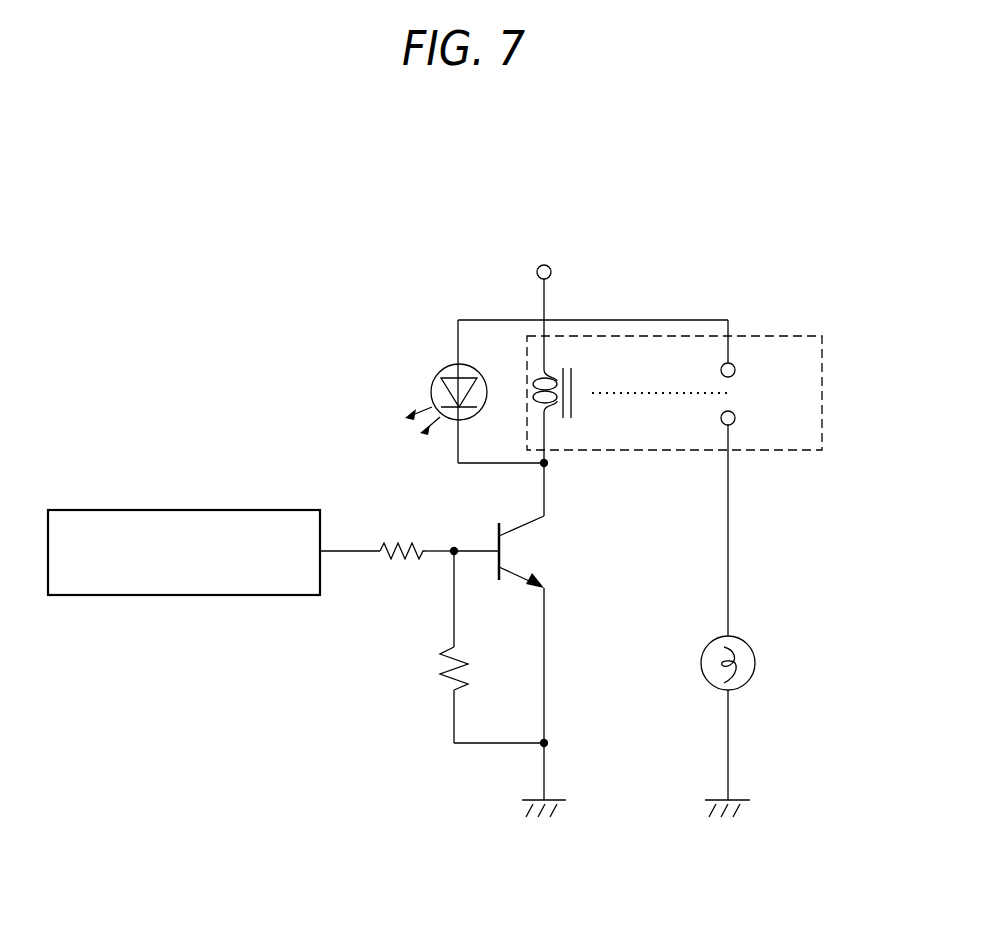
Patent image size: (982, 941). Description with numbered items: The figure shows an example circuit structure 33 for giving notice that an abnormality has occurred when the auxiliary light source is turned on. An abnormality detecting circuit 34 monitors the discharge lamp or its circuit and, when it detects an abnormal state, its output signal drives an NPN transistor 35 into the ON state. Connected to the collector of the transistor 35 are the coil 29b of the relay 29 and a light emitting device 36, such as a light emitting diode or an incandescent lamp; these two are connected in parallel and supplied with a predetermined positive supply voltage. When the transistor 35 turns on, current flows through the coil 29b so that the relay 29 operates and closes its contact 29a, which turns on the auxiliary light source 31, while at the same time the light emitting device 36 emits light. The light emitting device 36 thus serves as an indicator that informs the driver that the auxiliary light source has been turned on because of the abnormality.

The circuit structure example 33 is at (113, 205).
The abnormality detecting circuit 34 is at (183, 510).
The NPN transistor 35 is at (529, 522).
The light emitting device 36 is at (441, 369).
The relay 29 is at (762, 336).
The contact 29a is at (745, 393).
The coil 29b is at (552, 420).
The auxiliary light source 31 is at (757, 663).